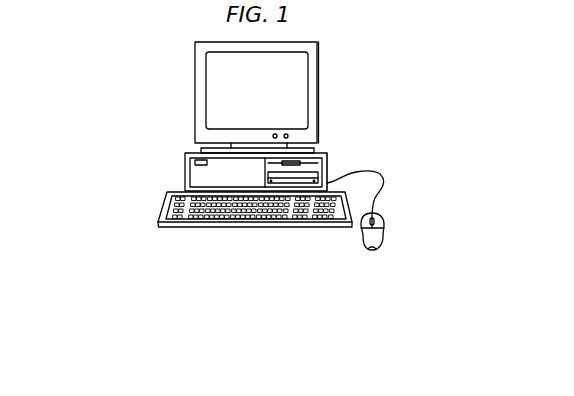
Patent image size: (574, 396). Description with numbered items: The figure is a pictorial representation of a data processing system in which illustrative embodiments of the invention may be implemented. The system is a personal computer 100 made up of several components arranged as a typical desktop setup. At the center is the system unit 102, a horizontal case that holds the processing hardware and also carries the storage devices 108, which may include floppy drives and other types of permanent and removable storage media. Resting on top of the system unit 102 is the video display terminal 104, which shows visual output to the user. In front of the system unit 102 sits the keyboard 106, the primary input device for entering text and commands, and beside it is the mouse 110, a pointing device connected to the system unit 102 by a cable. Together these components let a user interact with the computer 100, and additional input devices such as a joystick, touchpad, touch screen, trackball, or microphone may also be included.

The computer 100 is at (147, 86).
The system unit 102 is at (185, 170).
The video display terminal 104 is at (320, 94).
The keyboard 106 is at (182, 228).
The storage devices 108 is at (327, 163).
The mouse 110 is at (371, 250).